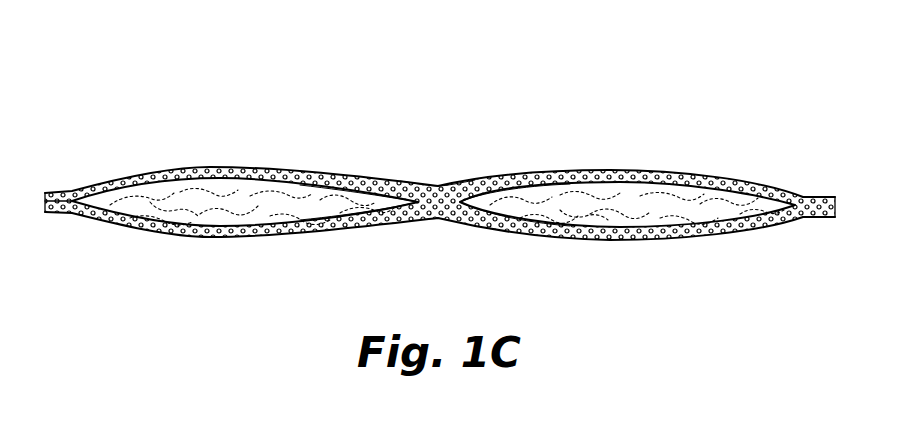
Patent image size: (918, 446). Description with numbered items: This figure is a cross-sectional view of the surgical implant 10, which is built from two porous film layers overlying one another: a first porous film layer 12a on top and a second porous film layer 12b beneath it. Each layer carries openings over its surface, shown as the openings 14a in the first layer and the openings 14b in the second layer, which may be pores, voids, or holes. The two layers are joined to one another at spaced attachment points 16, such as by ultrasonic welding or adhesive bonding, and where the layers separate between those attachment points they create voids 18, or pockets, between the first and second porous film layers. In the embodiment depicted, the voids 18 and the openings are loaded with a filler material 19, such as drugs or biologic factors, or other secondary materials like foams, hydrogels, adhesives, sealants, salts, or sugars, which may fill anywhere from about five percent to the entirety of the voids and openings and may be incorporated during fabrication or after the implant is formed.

The surgical implant 10 is at (148, 136).
The first porous film layer 12a is at (90, 178).
The second porous film layer 12b is at (80, 223).
The openings 14a is at (348, 172).
The openings 14b is at (290, 239).
The attachment points 16 is at (438, 184).
The voids 18 is at (226, 203).
The filler material 19 is at (335, 200).